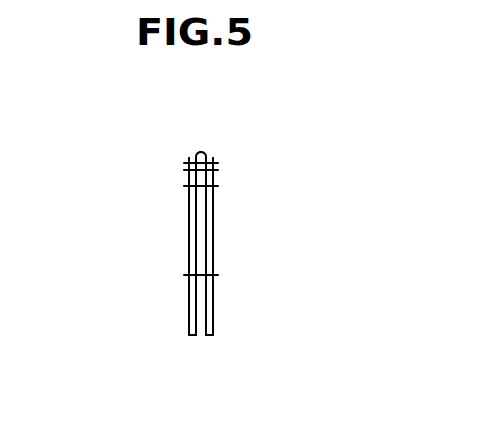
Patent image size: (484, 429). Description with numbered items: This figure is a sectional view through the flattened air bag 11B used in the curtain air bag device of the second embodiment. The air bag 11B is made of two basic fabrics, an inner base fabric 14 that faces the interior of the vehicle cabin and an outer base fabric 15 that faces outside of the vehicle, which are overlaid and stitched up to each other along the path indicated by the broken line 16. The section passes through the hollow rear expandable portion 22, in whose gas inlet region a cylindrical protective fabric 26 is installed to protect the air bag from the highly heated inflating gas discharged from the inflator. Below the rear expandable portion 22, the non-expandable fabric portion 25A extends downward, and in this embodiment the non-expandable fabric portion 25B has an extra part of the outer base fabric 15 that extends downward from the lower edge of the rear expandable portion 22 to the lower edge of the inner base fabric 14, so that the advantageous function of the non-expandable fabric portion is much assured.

The flattened air bag 11B is at (205, 139).
The inner base fabric 14 is at (208, 337).
The outer base fabric 15 is at (192, 337).
The broken line 16 is at (218, 164).
The rear expandable portion 22 is at (213, 232).
The non-expandable fabric portion 25A is at (222, 303).
The non-expandable fabric portion 25B is at (180, 303).
The cylindrical protective fabric 26 is at (218, 172).